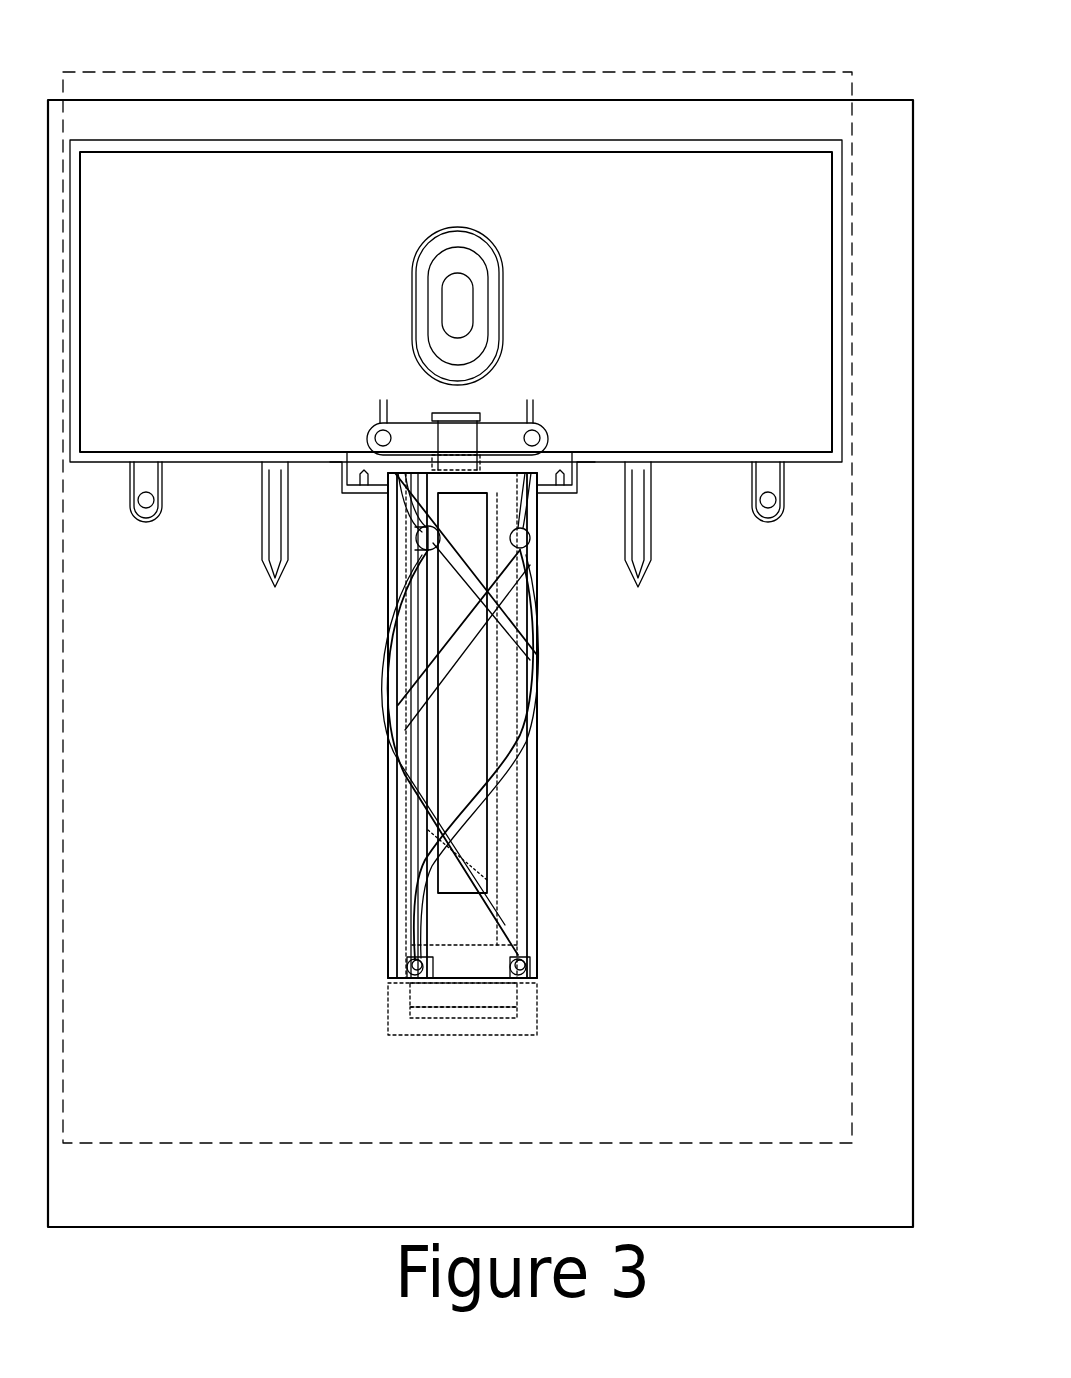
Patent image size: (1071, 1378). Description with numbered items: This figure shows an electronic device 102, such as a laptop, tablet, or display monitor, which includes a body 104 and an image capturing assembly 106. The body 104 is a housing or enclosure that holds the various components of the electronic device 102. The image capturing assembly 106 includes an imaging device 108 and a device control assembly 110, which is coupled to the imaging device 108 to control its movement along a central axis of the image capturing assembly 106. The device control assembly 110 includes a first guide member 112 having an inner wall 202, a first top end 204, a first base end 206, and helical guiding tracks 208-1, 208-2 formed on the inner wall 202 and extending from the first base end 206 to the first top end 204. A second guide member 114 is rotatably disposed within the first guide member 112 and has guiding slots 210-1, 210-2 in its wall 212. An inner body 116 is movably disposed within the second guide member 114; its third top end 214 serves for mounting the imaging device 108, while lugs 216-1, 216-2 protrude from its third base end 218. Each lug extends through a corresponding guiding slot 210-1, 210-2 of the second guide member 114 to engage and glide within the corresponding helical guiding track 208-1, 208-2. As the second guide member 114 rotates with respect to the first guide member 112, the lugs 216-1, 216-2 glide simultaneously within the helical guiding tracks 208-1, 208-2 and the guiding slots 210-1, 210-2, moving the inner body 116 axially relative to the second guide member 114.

The electronic device 102 is at (488, 50).
The body 104 is at (885, 100).
The image capturing assembly 106 is at (290, 72).
The imaging device 108 is at (835, 252).
The device control assembly 110 is at (460, 1067).
The first guide member 112 is at (388, 767).
The second guide member 114 is at (525, 757).
The inner body 116 is at (495, 805).
The inner wall 202 is at (537, 687).
The first top end 204 is at (545, 480).
The first base end 206 is at (537, 977).
The helical guiding track 208-1 is at (465, 665).
The helical guiding track 208-2 is at (523, 657).
The guiding slot 210-1 is at (523, 555).
The guiding slot 210-2 is at (415, 572).
The wall 212 is at (537, 597).
The third top end 214 is at (403, 500).
The lug 216-1 is at (517, 975).
The lug 216-2 is at (412, 985).
The third base end 218 is at (470, 1010).